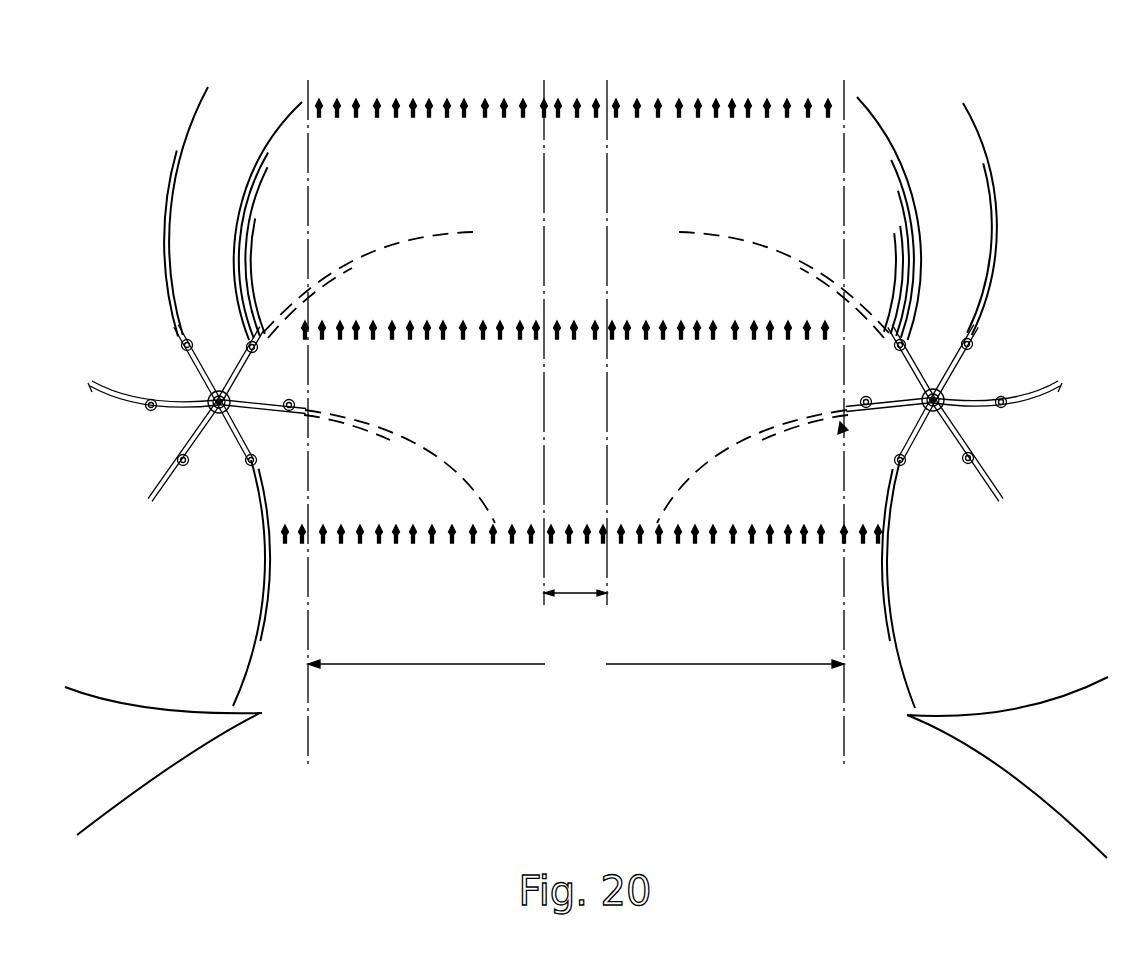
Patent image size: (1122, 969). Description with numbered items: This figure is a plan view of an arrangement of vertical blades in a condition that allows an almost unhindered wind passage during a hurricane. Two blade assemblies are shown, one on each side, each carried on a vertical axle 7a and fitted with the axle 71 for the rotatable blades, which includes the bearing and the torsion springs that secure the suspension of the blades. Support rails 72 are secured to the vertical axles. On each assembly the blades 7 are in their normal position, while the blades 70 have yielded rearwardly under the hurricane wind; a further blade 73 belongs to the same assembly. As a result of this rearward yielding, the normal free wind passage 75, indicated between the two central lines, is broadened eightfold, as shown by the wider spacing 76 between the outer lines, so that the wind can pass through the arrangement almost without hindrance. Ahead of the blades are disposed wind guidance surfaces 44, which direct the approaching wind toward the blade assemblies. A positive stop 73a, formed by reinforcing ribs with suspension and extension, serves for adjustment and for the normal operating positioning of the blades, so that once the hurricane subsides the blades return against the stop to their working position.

The blade 7 is at (248, 665).
The vertical axle 7a is at (207, 410).
The wind guidance surface 44 is at (130, 722).
The blade 70 is at (900, 187).
The axle 71 is at (185, 466).
The support rail 72 is at (229, 352).
The blade 73 is at (993, 287).
The positive stop 73a is at (843, 432).
The normal free wind passage 75 is at (583, 594).
The broadened wind passage 76 is at (576, 666).